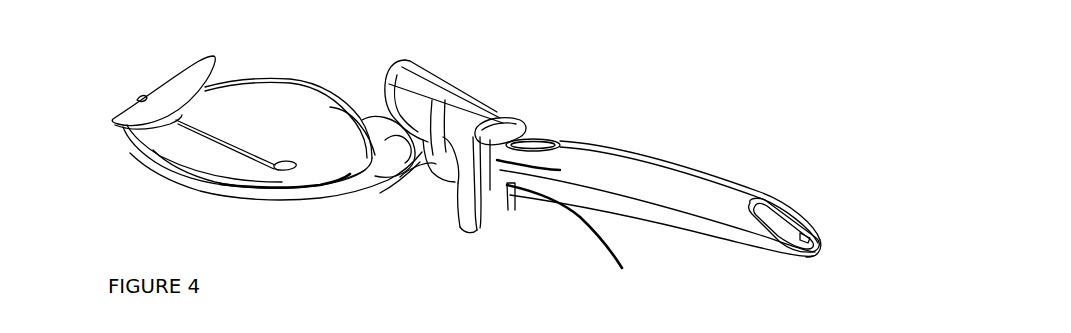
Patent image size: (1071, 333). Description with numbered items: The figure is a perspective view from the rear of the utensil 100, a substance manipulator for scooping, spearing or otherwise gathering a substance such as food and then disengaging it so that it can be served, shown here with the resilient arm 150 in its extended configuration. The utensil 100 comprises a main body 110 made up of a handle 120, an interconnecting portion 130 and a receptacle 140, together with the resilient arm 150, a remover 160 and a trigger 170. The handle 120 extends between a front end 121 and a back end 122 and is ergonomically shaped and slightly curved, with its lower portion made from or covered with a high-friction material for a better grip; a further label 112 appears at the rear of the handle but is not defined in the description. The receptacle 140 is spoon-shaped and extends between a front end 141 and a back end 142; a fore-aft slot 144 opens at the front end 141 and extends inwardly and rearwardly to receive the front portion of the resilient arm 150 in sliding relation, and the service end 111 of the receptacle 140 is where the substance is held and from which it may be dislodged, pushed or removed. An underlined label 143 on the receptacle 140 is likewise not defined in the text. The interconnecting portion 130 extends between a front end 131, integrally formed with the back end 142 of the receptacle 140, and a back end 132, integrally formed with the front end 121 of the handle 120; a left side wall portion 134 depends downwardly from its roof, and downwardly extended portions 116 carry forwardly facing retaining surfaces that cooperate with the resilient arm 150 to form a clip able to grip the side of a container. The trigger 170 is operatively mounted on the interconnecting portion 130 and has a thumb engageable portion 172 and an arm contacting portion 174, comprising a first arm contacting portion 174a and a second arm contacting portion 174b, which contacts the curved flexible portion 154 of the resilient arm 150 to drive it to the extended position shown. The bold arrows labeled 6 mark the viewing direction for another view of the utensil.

The utensil 100 is at (630, 84).
The main body 110 is at (388, 150).
The service end 111 is at (137, 101).
The second end of frame 112 is at (800, 267).
The downwardly extended portions 116 is at (487, 230).
The handle 120 is at (688, 194).
The front end 121 is at (497, 160).
The back end 122 is at (813, 253).
The interconnecting portion 130 is at (478, 152).
The front end 131 is at (327, 193).
The back end 132 is at (483, 150).
The left side wall portion 134 is at (440, 147).
The receptacle 140 is at (270, 104).
The front end 141 is at (140, 103).
The back end 142 is at (350, 167).
The ring opening 143 is at (298, 142).
The fore-aft slot 144 is at (237, 150).
The resilient arm 150 is at (277, 192).
The curved flexible portion 154 is at (372, 193).
The remover 160 is at (182, 92).
The trigger 170 is at (417, 94).
The thumb engageable portion 172 is at (487, 117).
The arm contacting portion 174 is at (451, 218).
The first arm contacting portion 174a is at (425, 172).
The second arm contacting portion 174b is at (395, 193).
The section line for FIG. 6 is at (90, 75).